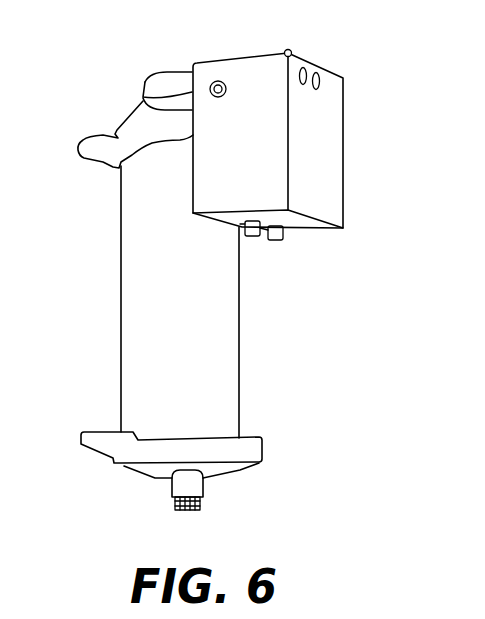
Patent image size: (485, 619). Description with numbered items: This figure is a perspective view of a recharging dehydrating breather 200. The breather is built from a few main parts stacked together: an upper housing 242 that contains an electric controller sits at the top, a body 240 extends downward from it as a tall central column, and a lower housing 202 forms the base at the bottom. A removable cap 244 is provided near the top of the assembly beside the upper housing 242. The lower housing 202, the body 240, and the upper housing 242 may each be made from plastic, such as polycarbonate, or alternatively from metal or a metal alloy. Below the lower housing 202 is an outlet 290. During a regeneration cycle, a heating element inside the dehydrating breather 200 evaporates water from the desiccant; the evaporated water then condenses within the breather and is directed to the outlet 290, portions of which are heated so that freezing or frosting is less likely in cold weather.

The dehydrating breather 200 is at (312, 338).
The lower housing 202 is at (88, 448).
The body 240 is at (133, 339).
The upper housing 242 is at (348, 137).
The removable cap 244 is at (165, 84).
The outlet 290 is at (203, 505).